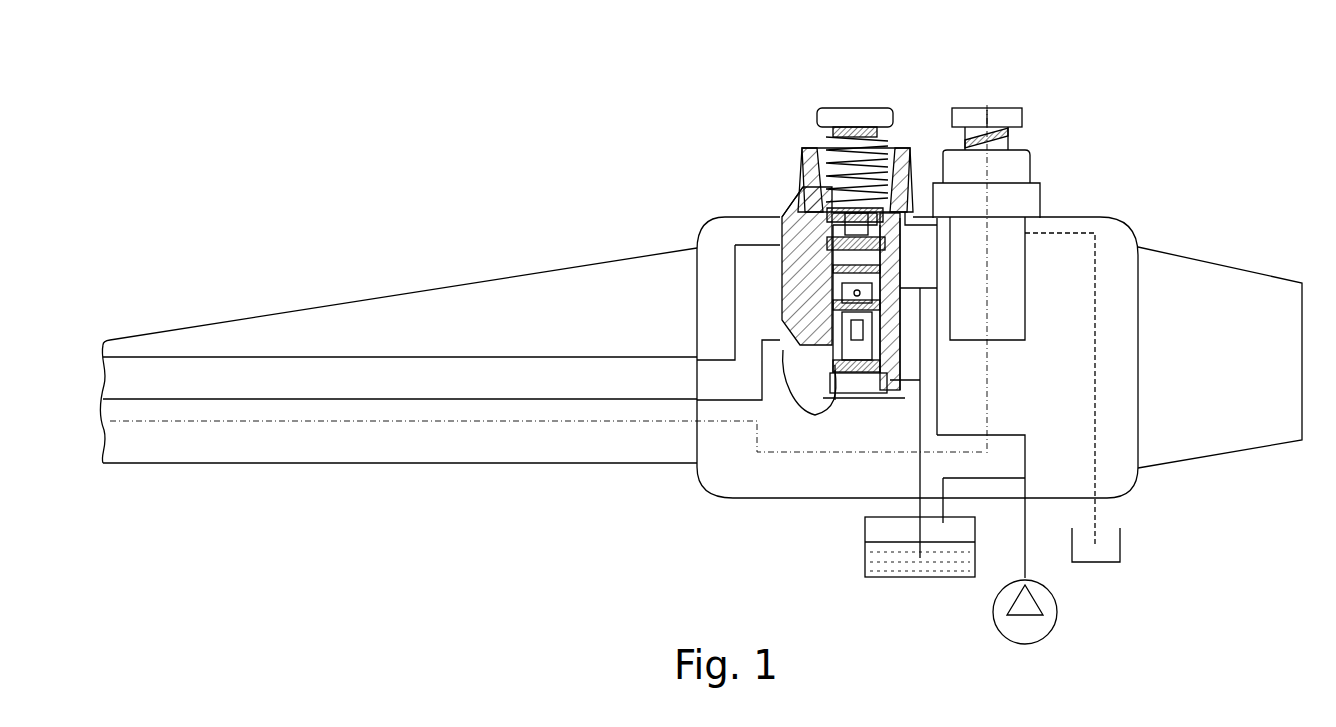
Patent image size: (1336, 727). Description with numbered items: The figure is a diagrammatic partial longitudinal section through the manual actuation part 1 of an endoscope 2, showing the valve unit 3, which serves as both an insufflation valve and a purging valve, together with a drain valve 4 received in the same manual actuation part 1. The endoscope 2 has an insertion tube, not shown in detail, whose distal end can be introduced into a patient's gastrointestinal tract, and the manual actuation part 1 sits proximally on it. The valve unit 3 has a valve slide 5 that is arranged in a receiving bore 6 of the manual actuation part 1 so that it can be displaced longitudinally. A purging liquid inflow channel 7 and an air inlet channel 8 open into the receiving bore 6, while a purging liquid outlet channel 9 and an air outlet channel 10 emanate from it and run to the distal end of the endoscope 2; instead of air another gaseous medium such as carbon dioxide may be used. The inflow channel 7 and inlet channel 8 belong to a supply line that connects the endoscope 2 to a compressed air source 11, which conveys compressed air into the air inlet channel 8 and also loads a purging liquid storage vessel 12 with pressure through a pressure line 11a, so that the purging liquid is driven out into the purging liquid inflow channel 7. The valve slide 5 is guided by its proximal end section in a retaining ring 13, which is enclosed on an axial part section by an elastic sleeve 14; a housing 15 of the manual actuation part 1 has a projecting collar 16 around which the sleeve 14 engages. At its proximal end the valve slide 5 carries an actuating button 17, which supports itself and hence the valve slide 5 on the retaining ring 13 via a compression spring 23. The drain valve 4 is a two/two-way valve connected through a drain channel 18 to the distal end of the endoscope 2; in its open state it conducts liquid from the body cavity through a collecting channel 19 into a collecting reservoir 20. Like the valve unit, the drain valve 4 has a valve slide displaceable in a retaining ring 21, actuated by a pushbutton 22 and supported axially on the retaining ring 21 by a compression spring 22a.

The manual actuation part 1 is at (1104, 213).
The endoscope 2 is at (652, 468).
The valve unit 3 is at (790, 188).
The drain valve 4 is at (1042, 172).
The valve slide 5 is at (793, 193).
The receiving bore 6 is at (790, 216).
The purging liquid inflow channel 7 is at (885, 392).
The air inlet channel 8 is at (902, 287).
The purging liquid outlet channel 9 is at (822, 372).
The air outlet channel 10 is at (780, 248).
The compressed air source 11 is at (1047, 628).
The pressure line 11a is at (1000, 477).
The purging liquid storage vessel 12 is at (902, 583).
The retaining ring 13 is at (823, 153).
The elastic sleeve 14 is at (934, 165).
The housing 15 is at (836, 398).
The projecting collar 16 is at (908, 187).
The actuating button 17 is at (852, 112).
The drain channel 18 is at (997, 388).
The collecting channel 19 is at (1098, 355).
The collecting reservoir 20 is at (1120, 545).
The retaining ring 21 is at (1023, 170).
The pushbutton 22 is at (1022, 118).
The compression spring 22a is at (997, 112).
The compression spring 23 is at (848, 113).